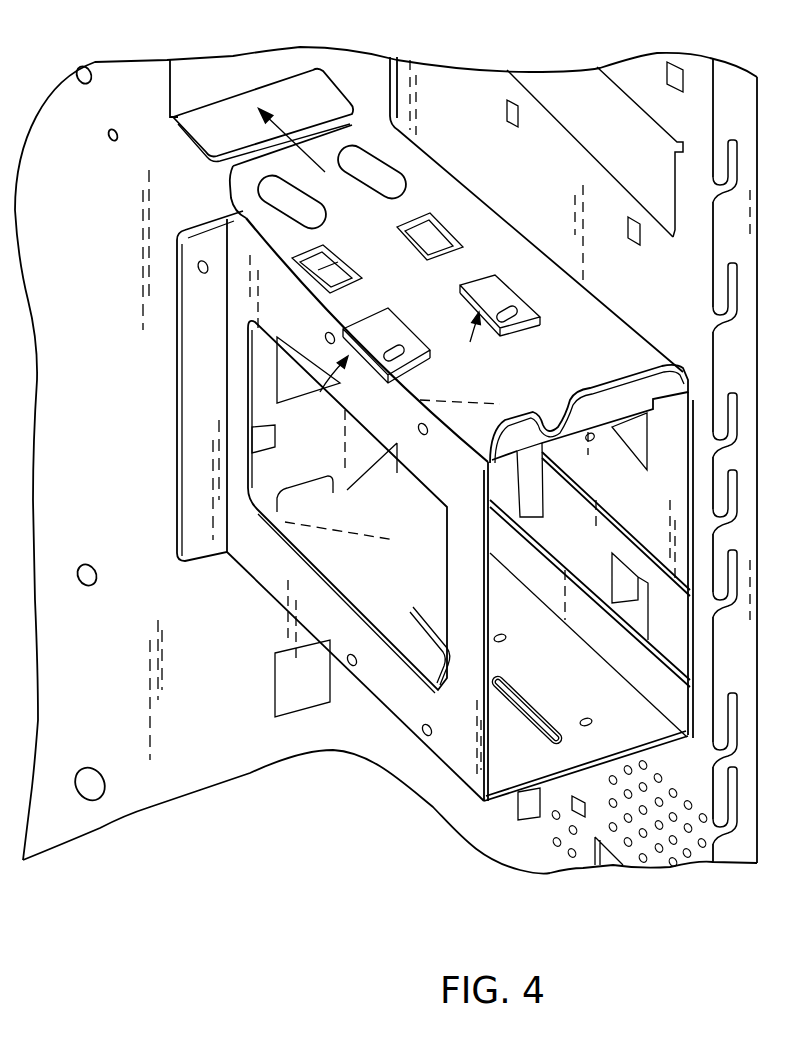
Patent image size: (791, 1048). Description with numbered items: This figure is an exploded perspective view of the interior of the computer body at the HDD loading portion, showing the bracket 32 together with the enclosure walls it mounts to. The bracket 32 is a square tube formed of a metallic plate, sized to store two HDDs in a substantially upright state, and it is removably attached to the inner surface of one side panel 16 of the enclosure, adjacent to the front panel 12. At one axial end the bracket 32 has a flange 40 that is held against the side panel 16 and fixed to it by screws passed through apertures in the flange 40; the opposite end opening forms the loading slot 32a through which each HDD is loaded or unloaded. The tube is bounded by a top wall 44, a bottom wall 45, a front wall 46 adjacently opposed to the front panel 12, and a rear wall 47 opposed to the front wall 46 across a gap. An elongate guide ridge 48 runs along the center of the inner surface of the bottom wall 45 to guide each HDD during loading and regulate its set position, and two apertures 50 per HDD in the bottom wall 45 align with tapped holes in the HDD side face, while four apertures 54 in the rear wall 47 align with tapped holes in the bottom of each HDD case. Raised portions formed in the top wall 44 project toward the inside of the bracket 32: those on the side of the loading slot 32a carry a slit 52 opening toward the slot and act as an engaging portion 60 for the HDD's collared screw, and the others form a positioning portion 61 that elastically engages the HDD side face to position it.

The front panel 12 is at (620, 72).
The side panel 16 is at (145, 73).
The bracket 32 is at (440, 170).
The loading slot 32a is at (676, 662).
The flange 40 is at (196, 387).
The top wall 44 is at (620, 350).
The bottom wall 45 is at (655, 733).
The front wall 46 is at (677, 437).
The rear wall 47 is at (260, 573).
The guide ridge 48 is at (542, 747).
The apertures 50 is at (510, 637).
The slit 52 is at (390, 362).
The apertures 54 is at (326, 336).
The engaging portion 60 is at (389, 365).
The positioning portion 61 is at (348, 263).